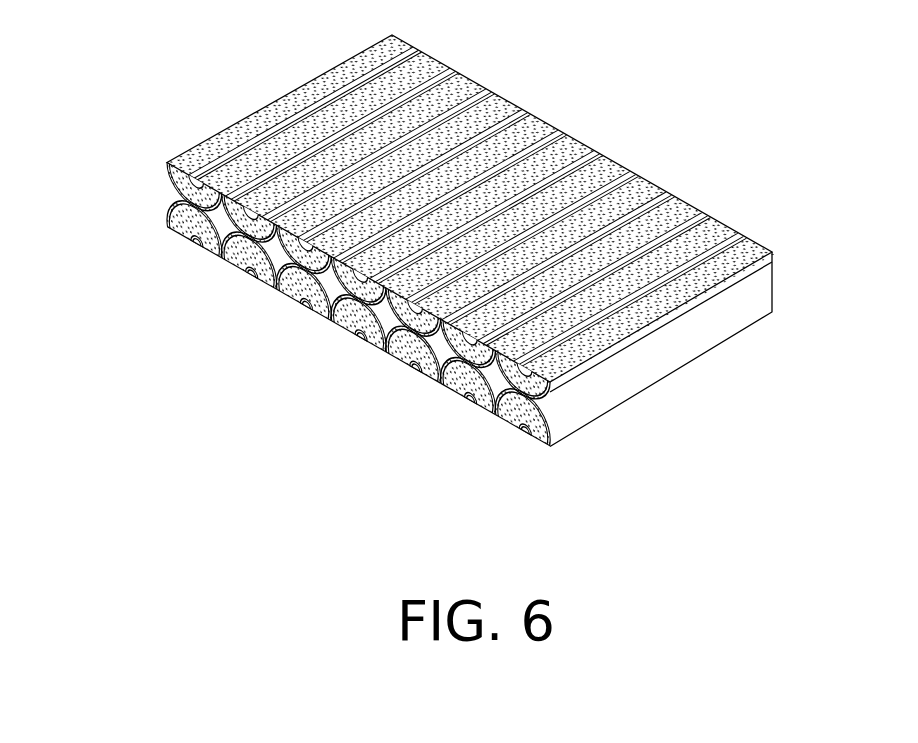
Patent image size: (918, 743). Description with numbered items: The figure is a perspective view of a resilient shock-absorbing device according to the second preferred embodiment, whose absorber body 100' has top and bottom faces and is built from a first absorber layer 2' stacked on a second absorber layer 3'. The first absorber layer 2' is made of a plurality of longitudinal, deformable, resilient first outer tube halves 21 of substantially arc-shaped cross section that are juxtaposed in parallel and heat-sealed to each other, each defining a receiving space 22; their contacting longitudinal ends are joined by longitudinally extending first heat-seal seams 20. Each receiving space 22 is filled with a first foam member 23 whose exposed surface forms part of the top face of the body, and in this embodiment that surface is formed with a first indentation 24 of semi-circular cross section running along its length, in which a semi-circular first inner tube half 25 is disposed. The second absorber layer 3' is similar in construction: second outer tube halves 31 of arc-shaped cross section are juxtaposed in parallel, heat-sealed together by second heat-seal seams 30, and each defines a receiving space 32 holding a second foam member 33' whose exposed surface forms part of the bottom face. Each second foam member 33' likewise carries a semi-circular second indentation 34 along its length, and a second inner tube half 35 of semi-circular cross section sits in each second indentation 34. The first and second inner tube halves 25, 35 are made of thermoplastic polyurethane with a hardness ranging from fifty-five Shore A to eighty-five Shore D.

The absorber body 100' is at (469, 208).
The first absorber layer 2' is at (700, 290).
The second absorber layer 3' is at (358, 361).
The first heat-seal seam 20 is at (490, 100).
The first outer tube half 21 is at (172, 186).
The receiving space 22 is at (186, 176).
The first foam member 23 is at (202, 162).
The first indentation 24 is at (188, 196).
The first inner tube half 25 is at (293, 112).
The second heat-seal seam 30 is at (371, 343).
The second outer tube half 31 is at (179, 212).
The receiving space 32 is at (186, 226).
The second foam member 33' is at (358, 336).
The second indentation 34 is at (209, 255).
The second inner tube half 35 is at (194, 243).